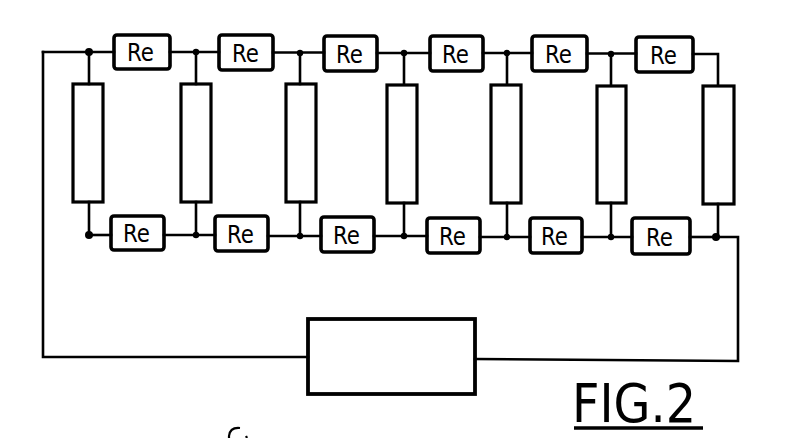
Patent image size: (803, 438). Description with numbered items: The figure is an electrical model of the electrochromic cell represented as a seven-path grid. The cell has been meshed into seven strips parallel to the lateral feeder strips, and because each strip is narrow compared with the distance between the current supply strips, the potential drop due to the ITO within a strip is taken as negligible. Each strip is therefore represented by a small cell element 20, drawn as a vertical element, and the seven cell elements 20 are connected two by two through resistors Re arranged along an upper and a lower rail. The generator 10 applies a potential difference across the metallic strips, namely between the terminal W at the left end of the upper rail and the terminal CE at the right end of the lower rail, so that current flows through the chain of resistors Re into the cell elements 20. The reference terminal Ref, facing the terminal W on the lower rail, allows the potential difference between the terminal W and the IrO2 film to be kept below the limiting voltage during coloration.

The cell element 20 is at (96, 141).
The generator 10 is at (421, 395).
The terminal W is at (87, 41).
The reference terminal Ref is at (76, 247).
The terminal CE is at (712, 251).